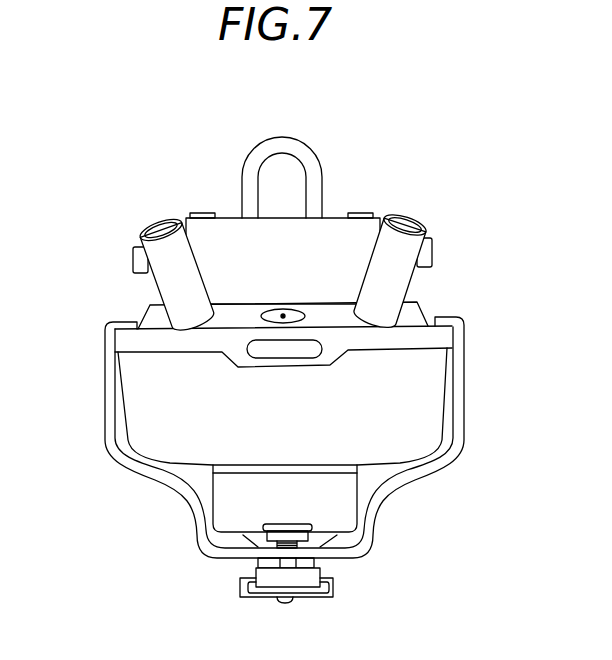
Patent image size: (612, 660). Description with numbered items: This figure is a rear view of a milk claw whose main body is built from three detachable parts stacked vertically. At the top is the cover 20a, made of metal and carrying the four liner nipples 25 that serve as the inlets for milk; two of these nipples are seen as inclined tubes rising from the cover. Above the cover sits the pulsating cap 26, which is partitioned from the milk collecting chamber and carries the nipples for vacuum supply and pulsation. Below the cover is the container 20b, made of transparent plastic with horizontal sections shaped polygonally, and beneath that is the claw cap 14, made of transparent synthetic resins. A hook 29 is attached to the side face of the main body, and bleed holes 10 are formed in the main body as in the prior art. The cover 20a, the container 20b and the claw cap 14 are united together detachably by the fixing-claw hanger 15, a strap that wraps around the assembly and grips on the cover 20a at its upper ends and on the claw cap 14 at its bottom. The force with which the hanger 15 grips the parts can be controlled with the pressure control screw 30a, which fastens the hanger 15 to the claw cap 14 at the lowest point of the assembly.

The bleed hole 10 is at (283, 314).
The claw cap 14 is at (348, 518).
The fixing-claw hanger 15 is at (460, 420).
The cover 20a is at (410, 305).
The container 20b is at (440, 437).
The liner nipple 25 is at (160, 277).
The pulsating cap 26 is at (333, 217).
The hook 29 is at (306, 351).
The pressure control screw 30a is at (310, 582).